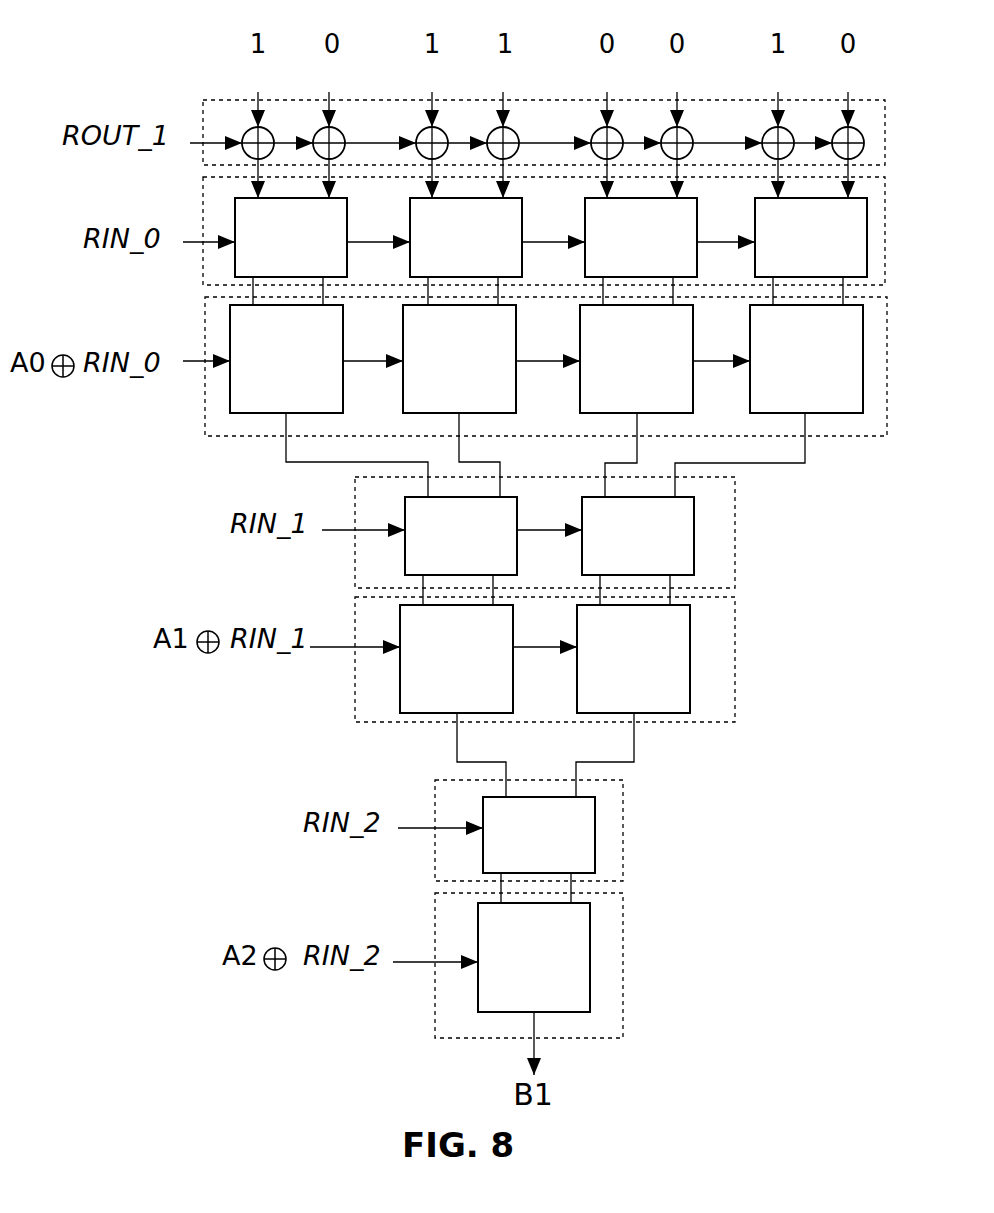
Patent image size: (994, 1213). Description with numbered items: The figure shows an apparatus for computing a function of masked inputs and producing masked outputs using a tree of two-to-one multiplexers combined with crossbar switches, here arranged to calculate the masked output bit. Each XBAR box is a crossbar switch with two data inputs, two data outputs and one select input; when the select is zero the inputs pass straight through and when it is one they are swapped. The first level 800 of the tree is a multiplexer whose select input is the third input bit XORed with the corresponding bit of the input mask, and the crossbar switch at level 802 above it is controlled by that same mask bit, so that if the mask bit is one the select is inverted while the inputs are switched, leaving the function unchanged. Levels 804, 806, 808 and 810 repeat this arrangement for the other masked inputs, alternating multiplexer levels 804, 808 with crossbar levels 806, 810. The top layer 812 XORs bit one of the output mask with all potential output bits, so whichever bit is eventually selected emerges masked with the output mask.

The top layer 812 is at (200, 100).
The crossbar switch level 810 is at (200, 276).
The multiplexer level 808 is at (204, 433).
The crossbar switch level 806 is at (357, 547).
The multiplexer level 804 is at (357, 722).
The crossbar switch level 802 is at (625, 862).
The first level of the tree 800 is at (431, 1039).